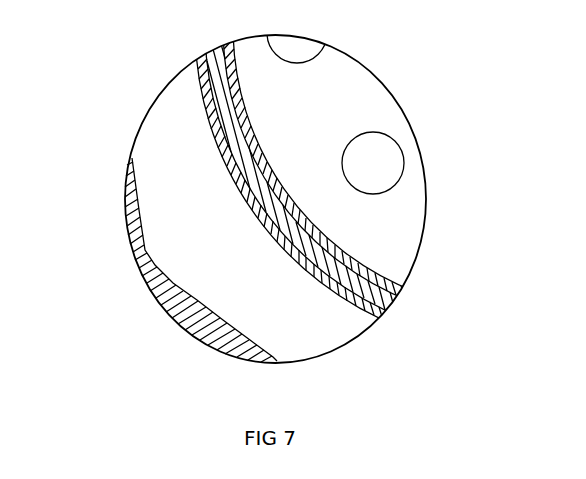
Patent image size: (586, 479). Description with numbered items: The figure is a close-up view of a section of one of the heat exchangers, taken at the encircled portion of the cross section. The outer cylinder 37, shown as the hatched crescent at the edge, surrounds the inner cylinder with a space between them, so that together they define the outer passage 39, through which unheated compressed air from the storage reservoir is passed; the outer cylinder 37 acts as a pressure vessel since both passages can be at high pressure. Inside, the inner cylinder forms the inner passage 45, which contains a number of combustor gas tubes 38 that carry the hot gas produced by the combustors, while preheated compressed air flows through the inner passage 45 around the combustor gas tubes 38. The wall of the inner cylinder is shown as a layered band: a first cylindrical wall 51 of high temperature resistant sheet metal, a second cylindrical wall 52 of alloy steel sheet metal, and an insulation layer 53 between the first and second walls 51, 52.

The outer cylinder 37 is at (160, 277).
The combustor gas tubes 38 is at (377, 155).
The outer passage 39 is at (175, 150).
The inner passage 45 is at (337, 100).
The first cylindrical wall 51 is at (367, 266).
The second cylindrical wall 52 is at (324, 285).
The insulation layer 53 is at (372, 295).